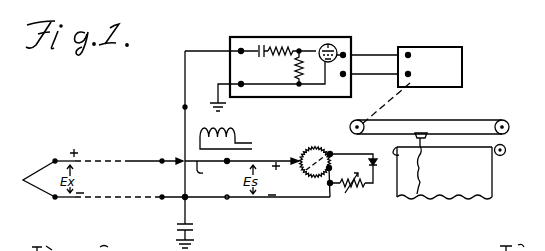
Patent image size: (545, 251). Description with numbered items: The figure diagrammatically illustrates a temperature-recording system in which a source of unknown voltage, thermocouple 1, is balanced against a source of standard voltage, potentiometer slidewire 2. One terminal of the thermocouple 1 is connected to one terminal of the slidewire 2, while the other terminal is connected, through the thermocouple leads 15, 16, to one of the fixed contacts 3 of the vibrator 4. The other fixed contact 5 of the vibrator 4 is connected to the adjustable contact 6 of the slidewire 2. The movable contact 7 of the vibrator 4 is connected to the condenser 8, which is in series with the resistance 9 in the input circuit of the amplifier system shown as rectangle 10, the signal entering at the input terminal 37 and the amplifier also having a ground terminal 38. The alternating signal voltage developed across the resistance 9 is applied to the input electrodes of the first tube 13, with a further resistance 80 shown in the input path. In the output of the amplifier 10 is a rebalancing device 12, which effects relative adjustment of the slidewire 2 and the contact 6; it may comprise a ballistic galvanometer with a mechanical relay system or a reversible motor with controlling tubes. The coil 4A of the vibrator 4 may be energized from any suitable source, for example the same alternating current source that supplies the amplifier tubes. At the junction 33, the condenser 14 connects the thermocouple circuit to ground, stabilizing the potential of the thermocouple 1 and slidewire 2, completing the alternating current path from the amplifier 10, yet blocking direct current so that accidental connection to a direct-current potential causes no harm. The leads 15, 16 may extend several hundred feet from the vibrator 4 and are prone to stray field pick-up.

The thermocouple 1 is at (40, 174).
The thermocouple lead 15 is at (96, 158).
The thermocouple lead 16 is at (92, 199).
The fixed contact 3 is at (168, 158).
The movable contact 7 is at (183, 137).
The vibrator 4 is at (161, 126).
The input terminal 37 is at (239, 50).
The amplifier ground terminal 38 is at (240, 83).
The condenser 8 is at (259, 46).
The resistor 80 is at (286, 46).
The resistance 9 is at (296, 72).
The first tube 13 is at (326, 44).
The amplifier system 10 is at (351, 37).
The rebalancing device 12 is at (455, 77).
The coil 4A is at (235, 128).
The fixed contact 5 is at (206, 171).
The adjustable contact 6 is at (296, 156).
The potentiometer slidewire 2 is at (325, 149).
The junction 33 is at (188, 200).
The condenser 14 is at (196, 235).